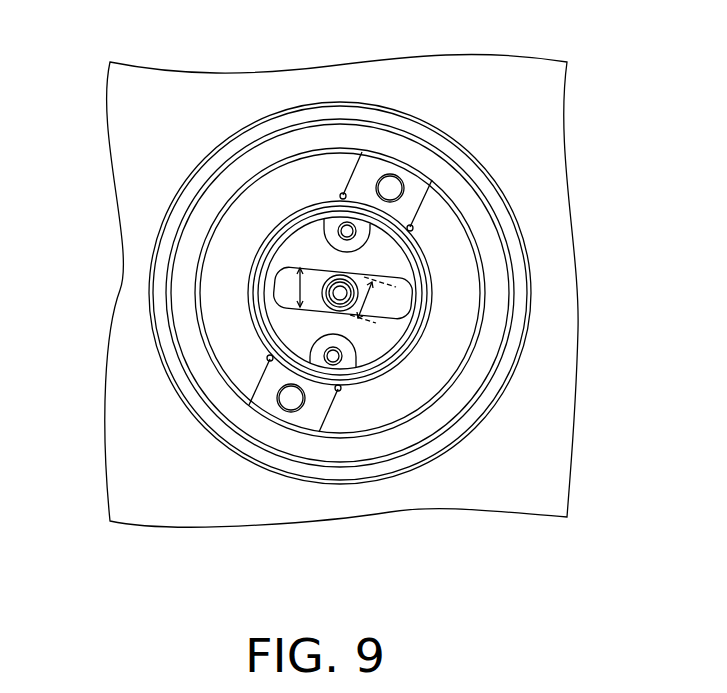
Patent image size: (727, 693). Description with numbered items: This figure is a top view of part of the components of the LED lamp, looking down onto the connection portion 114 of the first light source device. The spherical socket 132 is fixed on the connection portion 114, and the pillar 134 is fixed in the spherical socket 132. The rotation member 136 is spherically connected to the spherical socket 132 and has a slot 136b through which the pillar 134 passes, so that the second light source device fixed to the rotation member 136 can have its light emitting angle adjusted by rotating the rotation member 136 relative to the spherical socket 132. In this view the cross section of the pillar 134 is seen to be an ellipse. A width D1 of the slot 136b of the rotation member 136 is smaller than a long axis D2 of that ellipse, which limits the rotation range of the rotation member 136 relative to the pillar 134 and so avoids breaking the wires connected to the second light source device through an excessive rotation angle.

The connection portion 114 is at (338, 136).
The rotation member 136 is at (305, 245).
The slot 136b is at (410, 302).
The pillar 134 is at (328, 305).
The spherical socket 132 is at (397, 305).
The width of the slot D1 is at (283, 289).
The long axis of the ellipse D2 is at (395, 310).